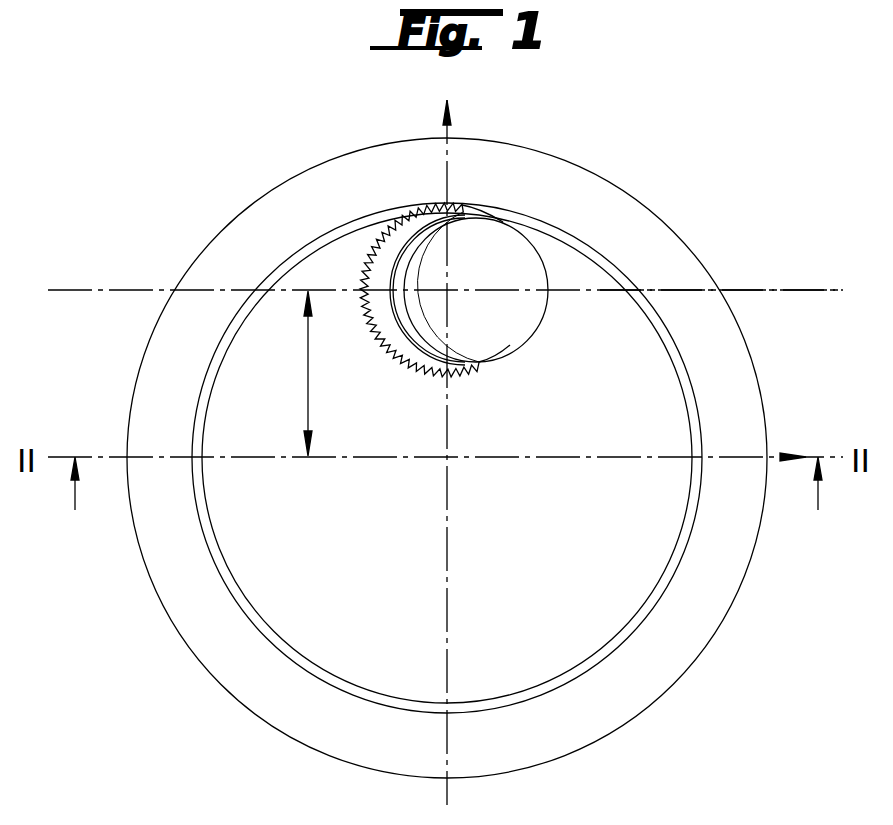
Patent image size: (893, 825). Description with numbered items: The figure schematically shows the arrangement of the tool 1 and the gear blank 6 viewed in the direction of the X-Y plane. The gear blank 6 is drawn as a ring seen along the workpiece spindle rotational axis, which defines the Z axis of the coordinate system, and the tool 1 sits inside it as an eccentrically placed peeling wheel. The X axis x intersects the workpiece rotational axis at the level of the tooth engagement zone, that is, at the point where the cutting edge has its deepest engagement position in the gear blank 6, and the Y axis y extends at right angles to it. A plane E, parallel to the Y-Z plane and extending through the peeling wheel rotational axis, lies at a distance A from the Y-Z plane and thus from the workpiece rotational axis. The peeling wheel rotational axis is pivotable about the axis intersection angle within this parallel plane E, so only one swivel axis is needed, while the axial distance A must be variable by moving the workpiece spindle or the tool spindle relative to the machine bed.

The tool 1 is at (498, 252).
The gear blank 6 is at (653, 255).
The distance A is at (296, 373).
The plane E is at (797, 290).
The X axis x is at (457, 113).
The Y axis y is at (793, 439).